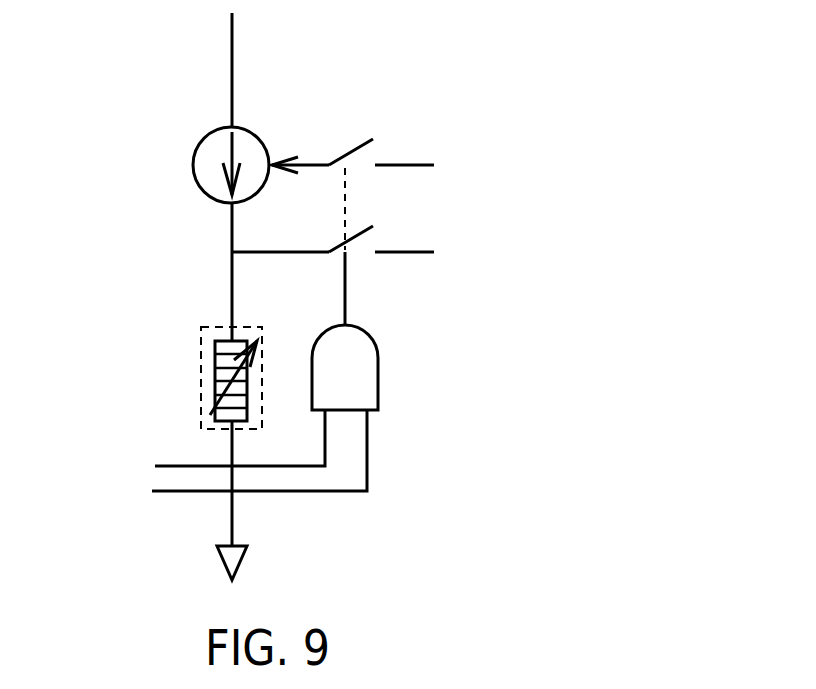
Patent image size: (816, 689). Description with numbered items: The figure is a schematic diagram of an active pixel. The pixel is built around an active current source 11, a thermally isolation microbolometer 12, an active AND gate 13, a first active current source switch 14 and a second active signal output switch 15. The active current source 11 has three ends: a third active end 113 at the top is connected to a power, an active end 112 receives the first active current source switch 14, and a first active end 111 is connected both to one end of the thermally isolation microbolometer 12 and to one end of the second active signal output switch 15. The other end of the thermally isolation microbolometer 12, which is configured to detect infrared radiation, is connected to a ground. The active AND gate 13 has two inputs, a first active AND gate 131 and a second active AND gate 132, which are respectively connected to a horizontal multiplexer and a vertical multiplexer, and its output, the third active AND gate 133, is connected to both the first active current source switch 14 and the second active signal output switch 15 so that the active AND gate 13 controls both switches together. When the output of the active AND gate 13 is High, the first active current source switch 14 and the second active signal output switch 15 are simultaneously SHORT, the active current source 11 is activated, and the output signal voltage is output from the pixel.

The active current source 11 is at (208, 128).
The first active end 111 is at (230, 226).
The active end 112 is at (286, 153).
The third active end 113 is at (229, 28).
The thermally isolation microbolometer 12 is at (200, 343).
The active AND gate 13 is at (380, 383).
The first active AND gate 131 is at (170, 466).
The second active AND gate 132 is at (168, 492).
The third active AND gate 133 is at (348, 297).
The first active current source switch 14 is at (372, 154).
The second active signal output switch 15 is at (378, 243).